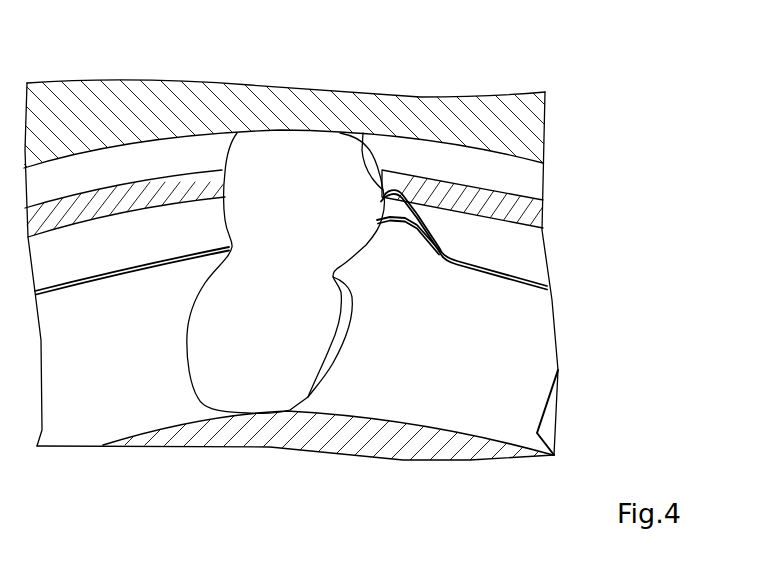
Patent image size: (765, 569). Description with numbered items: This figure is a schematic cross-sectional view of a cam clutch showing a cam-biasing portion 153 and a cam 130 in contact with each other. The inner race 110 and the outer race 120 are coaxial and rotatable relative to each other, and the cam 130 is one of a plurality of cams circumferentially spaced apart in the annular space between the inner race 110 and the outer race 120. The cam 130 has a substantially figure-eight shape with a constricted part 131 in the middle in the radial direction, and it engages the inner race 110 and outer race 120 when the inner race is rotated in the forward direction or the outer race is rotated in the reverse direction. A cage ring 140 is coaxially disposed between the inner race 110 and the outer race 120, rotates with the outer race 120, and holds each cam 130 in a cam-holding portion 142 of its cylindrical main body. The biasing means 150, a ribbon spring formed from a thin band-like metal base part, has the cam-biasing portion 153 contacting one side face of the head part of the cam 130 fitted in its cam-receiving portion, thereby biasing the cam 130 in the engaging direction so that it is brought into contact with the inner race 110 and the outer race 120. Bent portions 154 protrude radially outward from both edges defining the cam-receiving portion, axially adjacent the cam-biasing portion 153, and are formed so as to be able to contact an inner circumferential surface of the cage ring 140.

The inner race 110 is at (218, 437).
The outer race 120 is at (467, 117).
The cam 130 is at (270, 157).
The constricted part 131 is at (308, 397).
The cage ring 140 is at (93, 187).
The cam-holding portion 142 is at (363, 133).
The biasing means 150 is at (182, 252).
The cam-biasing portion 153 is at (393, 225).
The bent portion 154 is at (425, 198).